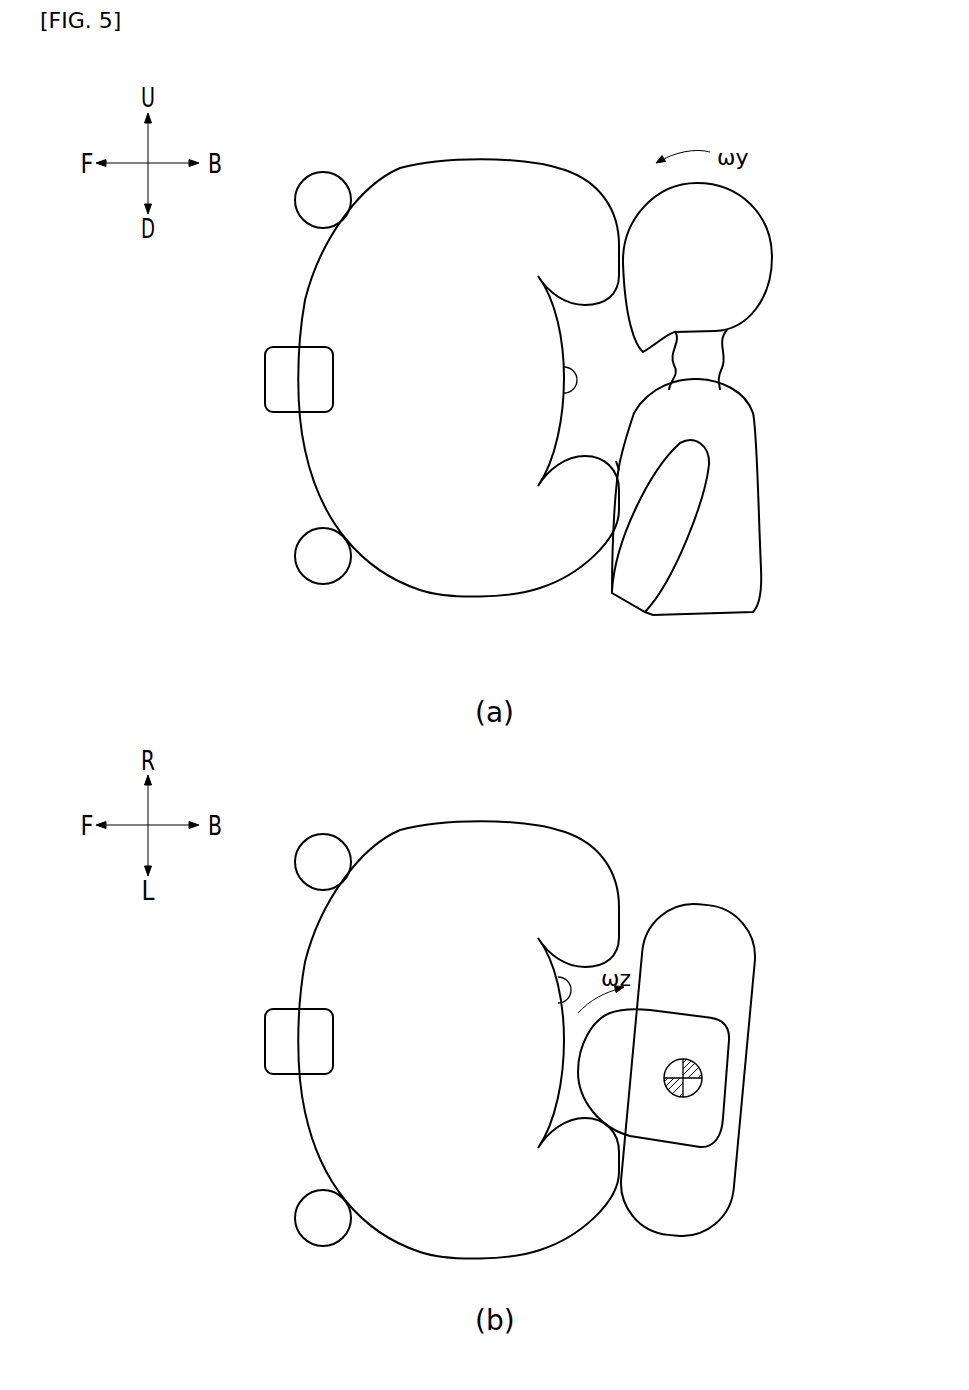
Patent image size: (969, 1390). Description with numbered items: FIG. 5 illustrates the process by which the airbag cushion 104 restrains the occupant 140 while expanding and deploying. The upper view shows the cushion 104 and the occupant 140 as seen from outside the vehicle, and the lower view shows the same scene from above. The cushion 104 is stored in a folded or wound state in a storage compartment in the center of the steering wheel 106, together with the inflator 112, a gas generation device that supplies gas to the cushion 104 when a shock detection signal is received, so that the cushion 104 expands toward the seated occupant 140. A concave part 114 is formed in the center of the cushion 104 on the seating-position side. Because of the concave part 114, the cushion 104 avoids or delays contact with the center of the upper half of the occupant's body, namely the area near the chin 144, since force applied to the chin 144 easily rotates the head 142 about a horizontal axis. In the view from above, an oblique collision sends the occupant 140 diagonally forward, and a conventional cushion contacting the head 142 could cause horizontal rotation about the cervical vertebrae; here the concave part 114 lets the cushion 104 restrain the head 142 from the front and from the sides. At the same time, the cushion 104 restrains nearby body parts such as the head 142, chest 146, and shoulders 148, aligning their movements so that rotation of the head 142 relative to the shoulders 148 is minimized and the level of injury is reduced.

The cushion 104 is at (394, 130).
The steering wheel 106 is at (318, 177).
The inflator 112 is at (265, 382).
The concave part 114 is at (567, 391).
The occupant 140 is at (742, 388).
The head 142 is at (772, 245).
The chin 144 is at (643, 350).
The chest 146 is at (616, 461).
The shoulders 148 is at (712, 426).